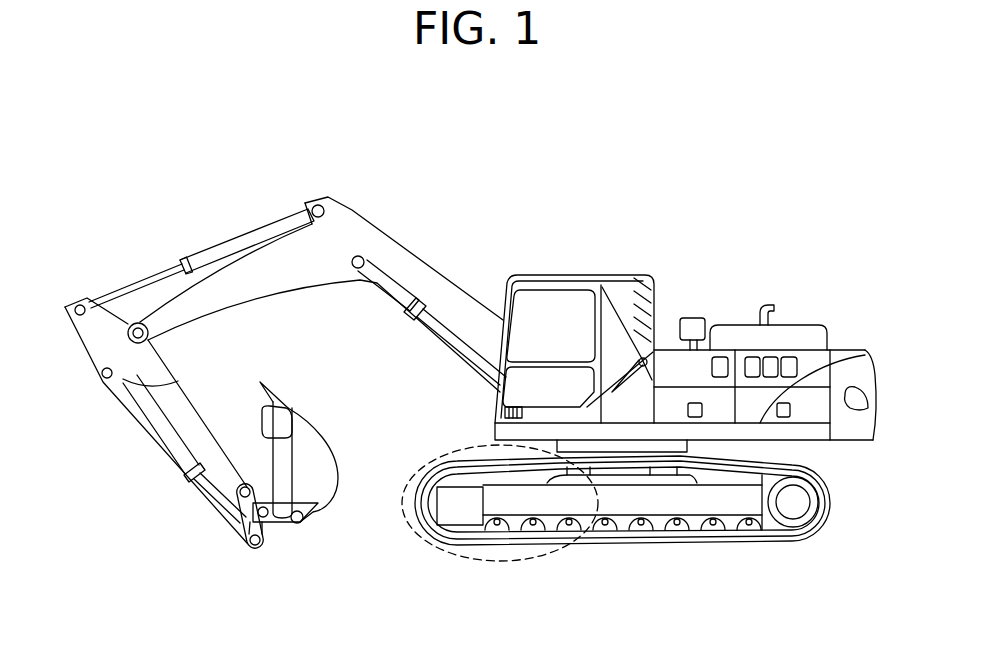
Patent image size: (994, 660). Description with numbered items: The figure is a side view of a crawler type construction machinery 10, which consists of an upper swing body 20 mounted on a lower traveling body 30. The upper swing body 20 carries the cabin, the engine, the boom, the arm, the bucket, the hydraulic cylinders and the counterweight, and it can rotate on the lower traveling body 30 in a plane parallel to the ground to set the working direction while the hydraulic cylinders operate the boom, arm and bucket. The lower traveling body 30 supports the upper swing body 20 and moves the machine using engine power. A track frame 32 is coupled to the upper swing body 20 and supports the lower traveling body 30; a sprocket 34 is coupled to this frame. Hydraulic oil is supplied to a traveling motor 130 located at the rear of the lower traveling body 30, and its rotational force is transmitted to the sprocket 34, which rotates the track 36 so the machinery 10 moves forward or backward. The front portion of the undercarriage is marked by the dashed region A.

The crawler type construction machinery 10 is at (508, 128).
The upper swing body 20 is at (819, 442).
The lower traveling body 30 is at (558, 548).
The track frame 32 is at (621, 506).
The sprocket 34 is at (801, 540).
The traveling motor 130 is at (790, 508).
The track 36 is at (808, 527).
The region A (idler portion of track) A is at (434, 555).